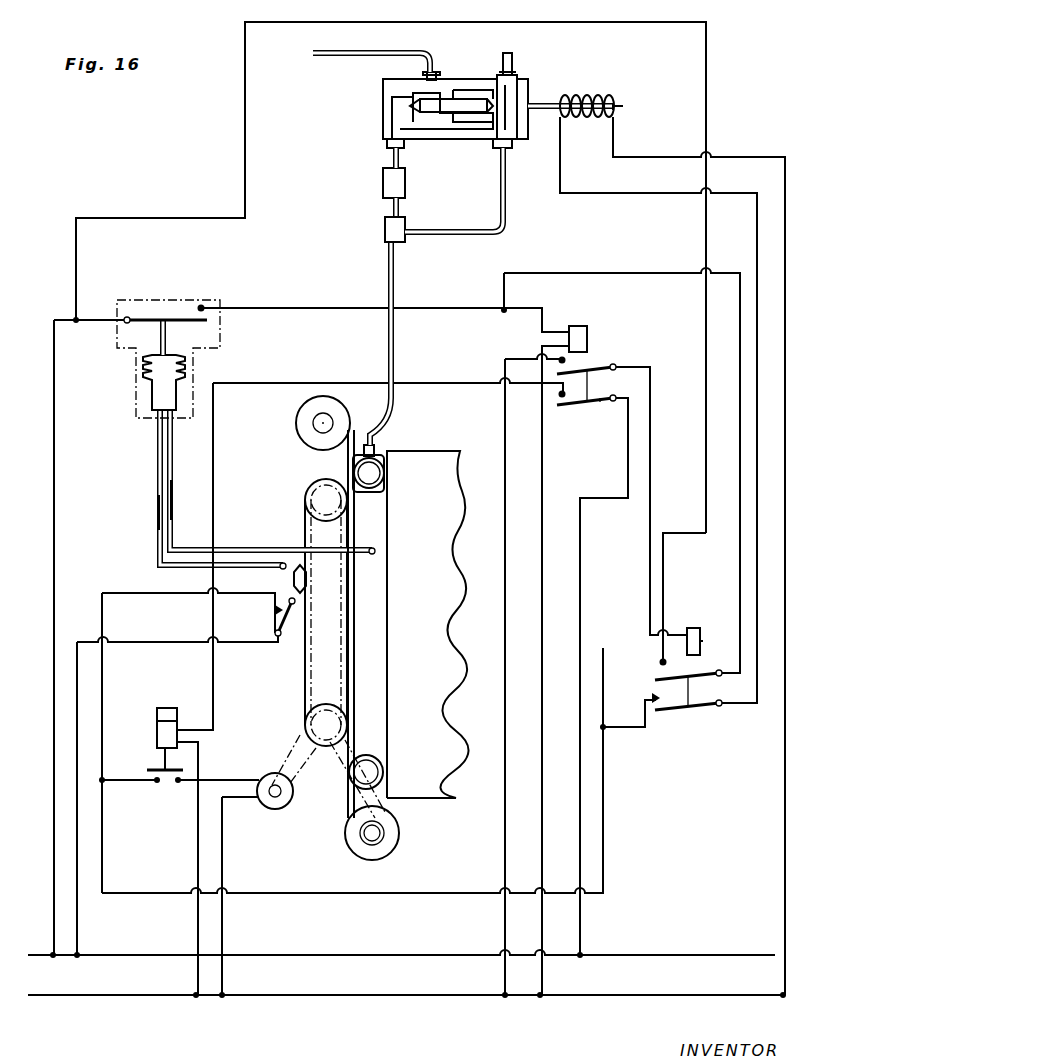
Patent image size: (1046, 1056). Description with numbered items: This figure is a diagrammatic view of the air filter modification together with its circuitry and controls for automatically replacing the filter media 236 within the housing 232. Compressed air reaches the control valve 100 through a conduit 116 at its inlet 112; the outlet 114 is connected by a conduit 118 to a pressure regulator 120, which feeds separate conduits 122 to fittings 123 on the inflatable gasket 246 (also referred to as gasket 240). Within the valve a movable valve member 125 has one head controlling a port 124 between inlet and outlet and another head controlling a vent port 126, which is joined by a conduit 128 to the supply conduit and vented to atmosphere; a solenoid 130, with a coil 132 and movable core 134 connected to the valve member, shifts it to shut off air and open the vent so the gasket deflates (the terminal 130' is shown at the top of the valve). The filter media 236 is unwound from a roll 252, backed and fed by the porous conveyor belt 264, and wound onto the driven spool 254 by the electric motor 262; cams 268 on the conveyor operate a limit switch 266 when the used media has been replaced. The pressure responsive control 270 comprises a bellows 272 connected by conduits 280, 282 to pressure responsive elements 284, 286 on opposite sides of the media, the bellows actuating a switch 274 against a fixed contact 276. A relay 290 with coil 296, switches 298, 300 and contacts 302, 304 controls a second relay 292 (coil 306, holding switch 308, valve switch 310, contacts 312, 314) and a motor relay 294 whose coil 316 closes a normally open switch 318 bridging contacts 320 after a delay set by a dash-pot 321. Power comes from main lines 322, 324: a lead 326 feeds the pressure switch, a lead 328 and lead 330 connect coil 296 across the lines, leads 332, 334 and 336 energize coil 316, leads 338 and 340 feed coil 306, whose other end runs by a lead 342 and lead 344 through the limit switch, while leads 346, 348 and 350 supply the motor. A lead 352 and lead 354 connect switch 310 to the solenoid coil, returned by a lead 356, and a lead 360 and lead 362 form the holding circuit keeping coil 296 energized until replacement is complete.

The control valve 100 is at (538, 85).
The inlet 112 is at (426, 82).
The outlet 114 is at (392, 128).
The conduit 116 is at (328, 56).
The conduit 118 is at (388, 149).
The pressure regulator 120 is at (405, 185).
The conduit 122 is at (388, 277).
The fitting 123 is at (374, 447).
The port 124 is at (410, 102).
The valve member 125 is at (453, 114).
The port 126 is at (498, 95).
The conduit 128 is at (506, 216).
The solenoid 130 is at (644, 119).
The solenoid terminal 130' is at (533, 56).
The coil 132 is at (605, 95).
The movable core 134 is at (544, 106).
The housing 232 is at (421, 452).
The filter media 236 is at (355, 640).
The gasket 240 is at (380, 763).
The inflatable gasket 246 is at (384, 492).
The roll 252 is at (296, 421).
The driven spool 254 is at (396, 846).
The electric motor 262 is at (105, 217).
The belt 264 is at (305, 692).
The limit switch 266 is at (272, 658).
The cams 268 is at (294, 580).
The pressure responsive control 270 is at (192, 296).
The bellows 272 is at (188, 367).
The switch 274 is at (133, 315).
The fixed contact 276 is at (204, 307).
The conduit 280 is at (171, 504).
The conduit 282 is at (158, 514).
The pressure responsive element 284 is at (375, 551).
The pressure responsive element 286 is at (283, 563).
The relay 290 is at (619, 349).
The second relay 292 is at (702, 620).
The motor relay 294 is at (148, 707).
The coil 296 is at (579, 325).
The switch 298 is at (608, 366).
The switch 300 is at (601, 402).
The contact 302 is at (558, 359).
The contact 304 is at (554, 405).
The coil 306 is at (700, 641).
The holding circuit switch 308 is at (718, 676).
The air valve controlling switch 310 is at (709, 706).
The contact 312 is at (660, 663).
The contact 314 is at (654, 696).
The coil 316 is at (157, 740).
The normally open switch 318 is at (194, 776).
The contacts 320 is at (156, 783).
The dash-pot 321 is at (193, 700).
The main electric power line 322 is at (303, 954).
The main electric power line 324 is at (290, 997).
The lead 326 is at (56, 574).
The lead 328 is at (425, 309).
The lead 330 is at (544, 483).
The lead 332 is at (582, 828).
The lead 334 is at (468, 382).
The lead 336 is at (196, 846).
The lead 338 is at (504, 831).
The lead 340 is at (650, 415).
The lead 342 is at (604, 782).
The lead 344 is at (78, 928).
The lead 346 is at (146, 771).
The lead 348 is at (257, 783).
The lead 350 is at (223, 867).
The lead 352 is at (647, 728).
The lead 354 is at (644, 195).
The lead 356 is at (782, 160).
The lead 360 is at (740, 551).
The lead 362 is at (662, 572).